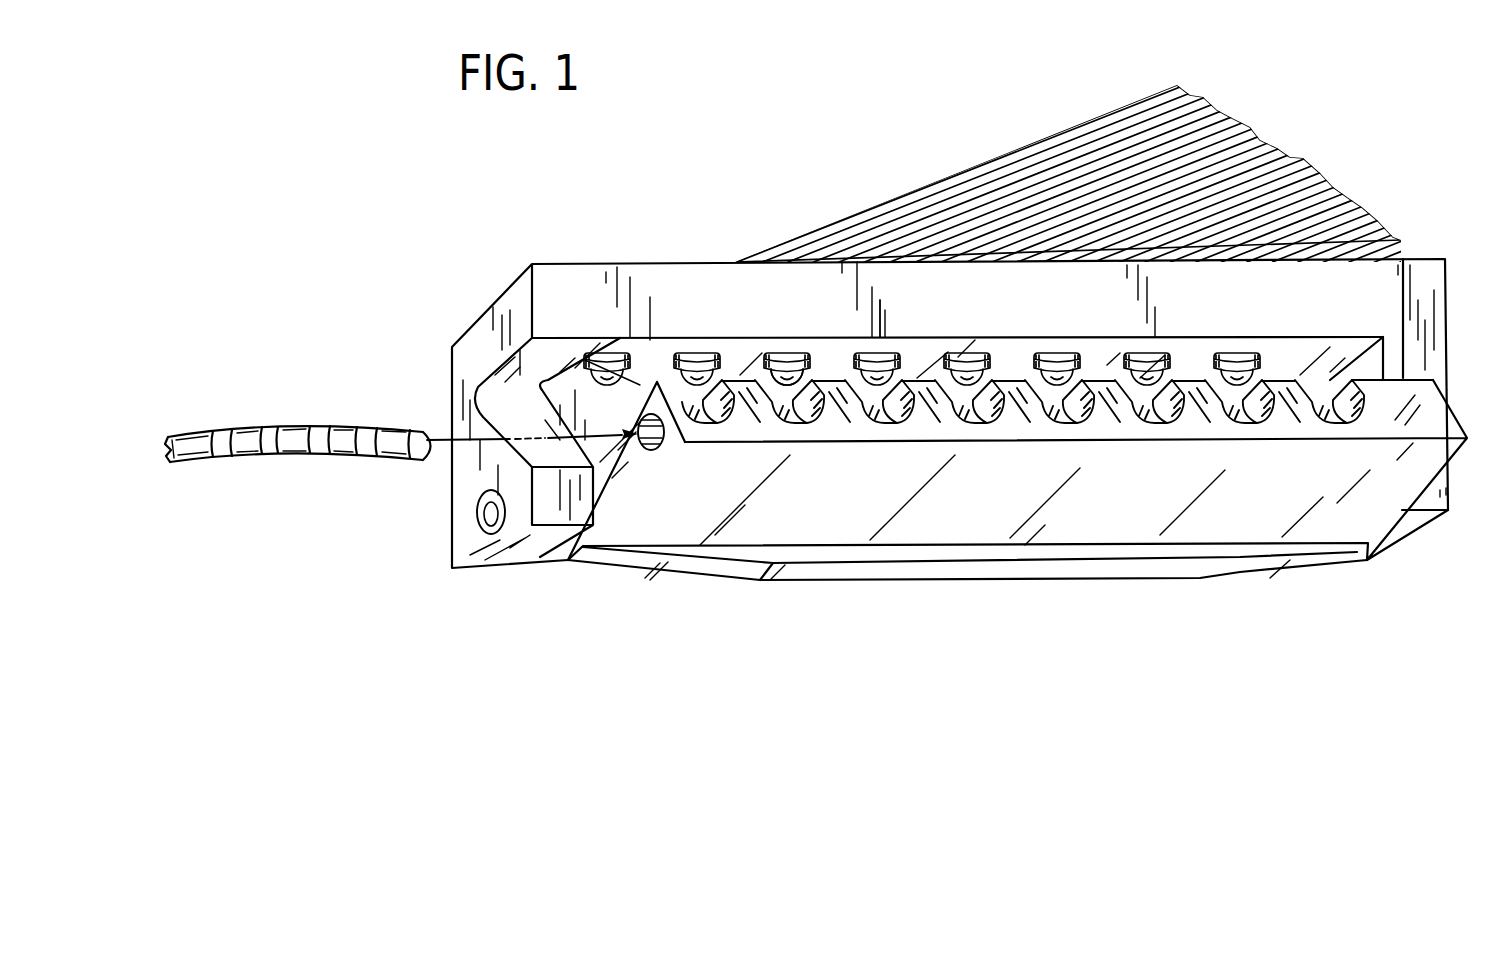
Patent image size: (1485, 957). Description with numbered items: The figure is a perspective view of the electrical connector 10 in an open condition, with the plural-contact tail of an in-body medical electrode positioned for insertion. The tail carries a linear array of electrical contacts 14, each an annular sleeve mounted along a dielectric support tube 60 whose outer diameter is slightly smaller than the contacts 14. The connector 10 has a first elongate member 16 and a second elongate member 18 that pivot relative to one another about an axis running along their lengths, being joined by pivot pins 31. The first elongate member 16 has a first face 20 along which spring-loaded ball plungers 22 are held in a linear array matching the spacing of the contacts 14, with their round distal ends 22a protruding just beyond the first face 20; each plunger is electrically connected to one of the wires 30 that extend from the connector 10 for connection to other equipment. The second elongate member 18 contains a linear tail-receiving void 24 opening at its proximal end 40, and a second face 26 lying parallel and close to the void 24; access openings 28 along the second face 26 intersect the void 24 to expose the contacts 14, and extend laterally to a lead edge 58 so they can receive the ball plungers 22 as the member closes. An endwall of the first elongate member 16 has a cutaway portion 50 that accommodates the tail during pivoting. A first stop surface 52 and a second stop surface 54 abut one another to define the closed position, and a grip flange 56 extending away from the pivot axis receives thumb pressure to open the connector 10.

The electrical connector 10 is at (448, 278).
The electrical contacts 14 is at (300, 430).
The first elongate member 16 is at (1415, 293).
The second elongate member 18 is at (1273, 513).
The first face 20 is at (692, 352).
The spring-loaded ball plungers 22 is at (698, 352).
The distal ends 22a is at (782, 353).
The tail-receiving void 24 is at (638, 418).
The second face 26 is at (1373, 397).
The access openings 28 is at (957, 382).
The wires 30 is at (1073, 138).
The pivot pins 31 is at (470, 515).
The proximal end 40 is at (630, 467).
The cutaway portion 50 is at (502, 397).
The first stop surface 52 is at (575, 408).
The second stop surface 54 is at (645, 390).
The grip flange 56 is at (787, 582).
The lead edge 58 is at (920, 382).
The dielectric support tube 60 is at (225, 450).